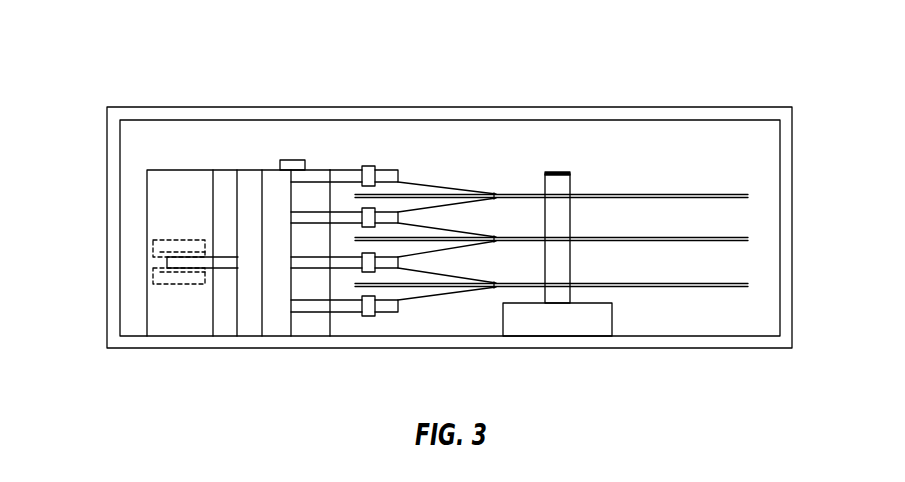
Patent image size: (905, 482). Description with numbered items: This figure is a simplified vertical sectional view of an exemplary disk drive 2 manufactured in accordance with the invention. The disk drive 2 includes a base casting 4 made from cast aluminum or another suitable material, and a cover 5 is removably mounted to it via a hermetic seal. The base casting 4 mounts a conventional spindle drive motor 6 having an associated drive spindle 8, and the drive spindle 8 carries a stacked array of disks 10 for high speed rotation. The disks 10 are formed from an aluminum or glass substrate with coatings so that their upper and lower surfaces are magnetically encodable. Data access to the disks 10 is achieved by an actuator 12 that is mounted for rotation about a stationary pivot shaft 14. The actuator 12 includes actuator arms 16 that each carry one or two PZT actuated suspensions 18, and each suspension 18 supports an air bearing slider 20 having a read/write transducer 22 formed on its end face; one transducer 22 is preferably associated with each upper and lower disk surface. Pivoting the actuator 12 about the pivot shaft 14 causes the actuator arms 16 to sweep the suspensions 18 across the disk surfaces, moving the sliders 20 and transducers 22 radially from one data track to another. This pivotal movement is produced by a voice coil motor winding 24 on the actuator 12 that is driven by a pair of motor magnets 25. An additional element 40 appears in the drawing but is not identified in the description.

The disk drive 2 is at (99, 46).
The base casting 4 is at (338, 343).
The cover 5 is at (208, 107).
The spindle drive motor 6 is at (613, 322).
The drive spindle 8 is at (571, 186).
The disks 10 is at (681, 194).
The actuator 12 is at (272, 330).
The stationary pivot shaft 14 is at (284, 160).
The actuator arms 16 is at (345, 170).
The PZT actuated suspensions 18 is at (432, 170).
The air bearing slider 20 is at (488, 176).
The read/write transducer 22 is at (500, 192).
The voice coil motor winding 24 is at (167, 260).
The motor magnets 25 is at (204, 242).
The ferrules 40 is at (378, 166).